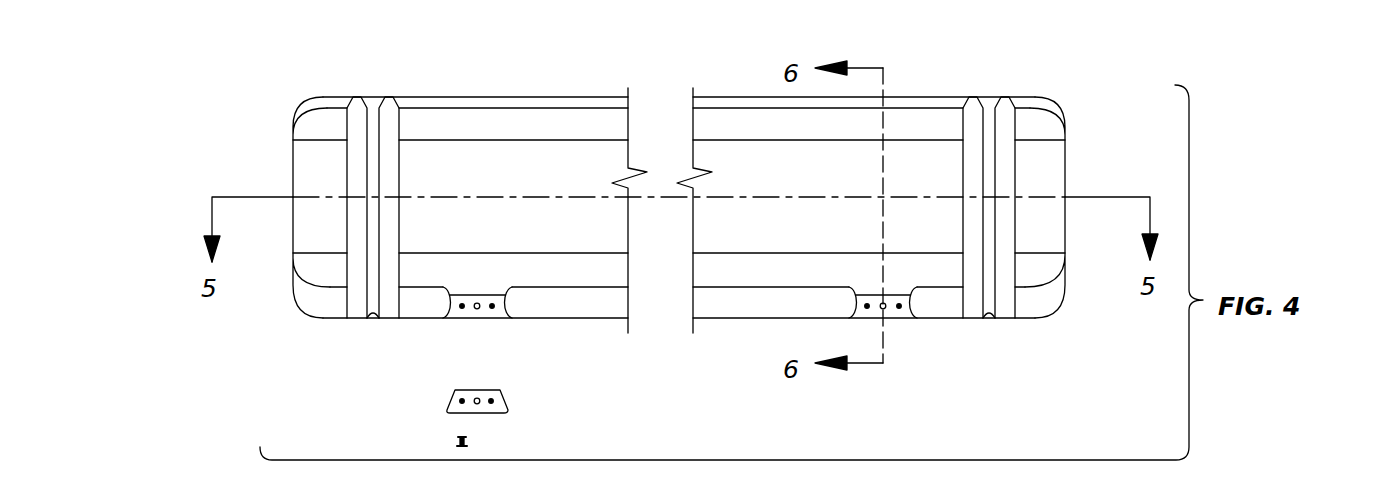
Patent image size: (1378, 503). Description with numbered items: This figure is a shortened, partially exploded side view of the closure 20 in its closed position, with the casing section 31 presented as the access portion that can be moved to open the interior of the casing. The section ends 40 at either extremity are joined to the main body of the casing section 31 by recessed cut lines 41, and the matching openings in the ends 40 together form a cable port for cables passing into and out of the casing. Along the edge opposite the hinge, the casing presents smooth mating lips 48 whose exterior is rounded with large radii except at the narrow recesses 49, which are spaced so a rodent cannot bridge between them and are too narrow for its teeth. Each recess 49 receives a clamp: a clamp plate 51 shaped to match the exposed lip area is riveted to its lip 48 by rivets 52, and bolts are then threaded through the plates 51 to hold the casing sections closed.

The roller assembly 20 is at (415, 86).
The casing section 31 is at (535, 160).
The end 40 is at (948, 95).
The recessed cut line 41 is at (408, 312).
The lip 48 is at (463, 318).
The recess 49 is at (502, 325).
The clamp plate 51 is at (457, 392).
The rivet 52 is at (458, 441).